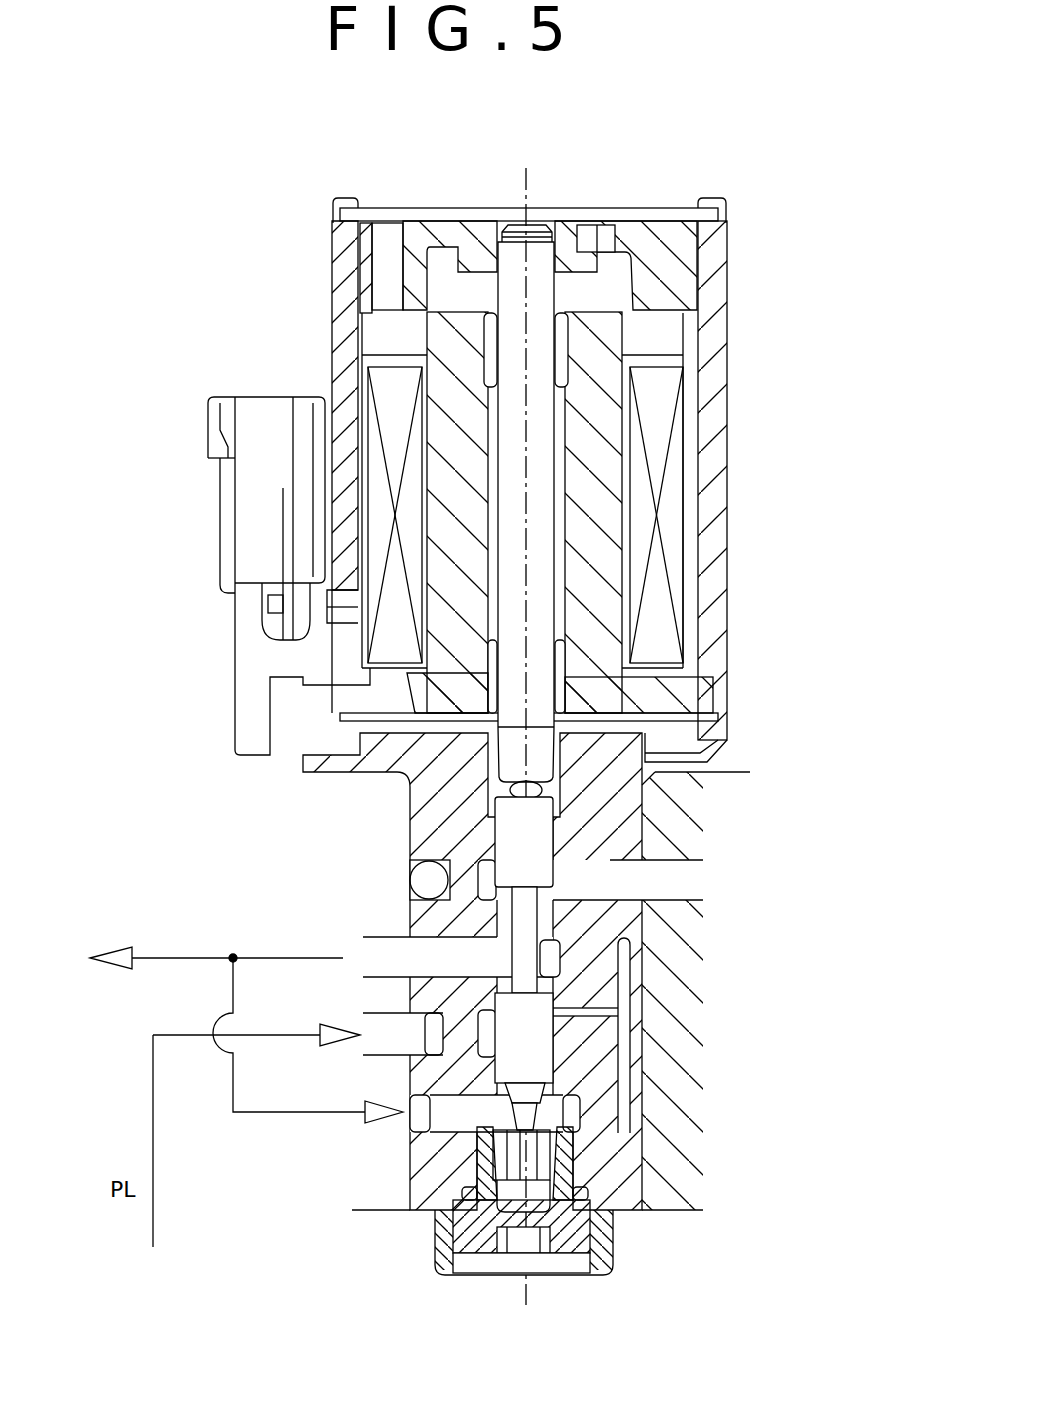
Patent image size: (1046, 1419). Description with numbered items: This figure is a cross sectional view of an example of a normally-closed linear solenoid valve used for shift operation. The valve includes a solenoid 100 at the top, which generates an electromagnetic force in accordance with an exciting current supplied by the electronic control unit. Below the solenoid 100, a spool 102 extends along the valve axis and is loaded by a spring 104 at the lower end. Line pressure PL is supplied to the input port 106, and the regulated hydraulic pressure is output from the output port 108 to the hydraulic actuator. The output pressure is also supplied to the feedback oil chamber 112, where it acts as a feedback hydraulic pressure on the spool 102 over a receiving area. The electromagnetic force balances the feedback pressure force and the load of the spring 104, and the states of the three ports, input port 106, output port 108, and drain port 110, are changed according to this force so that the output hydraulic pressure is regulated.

The solenoid 100 is at (668, 502).
The spool 102 is at (538, 1038).
The spring 104 is at (515, 1235).
The input port 106 is at (372, 1055).
The output port 108 is at (375, 942).
The drain port 110 is at (685, 857).
The feedback oil chamber 112 is at (573, 1113).